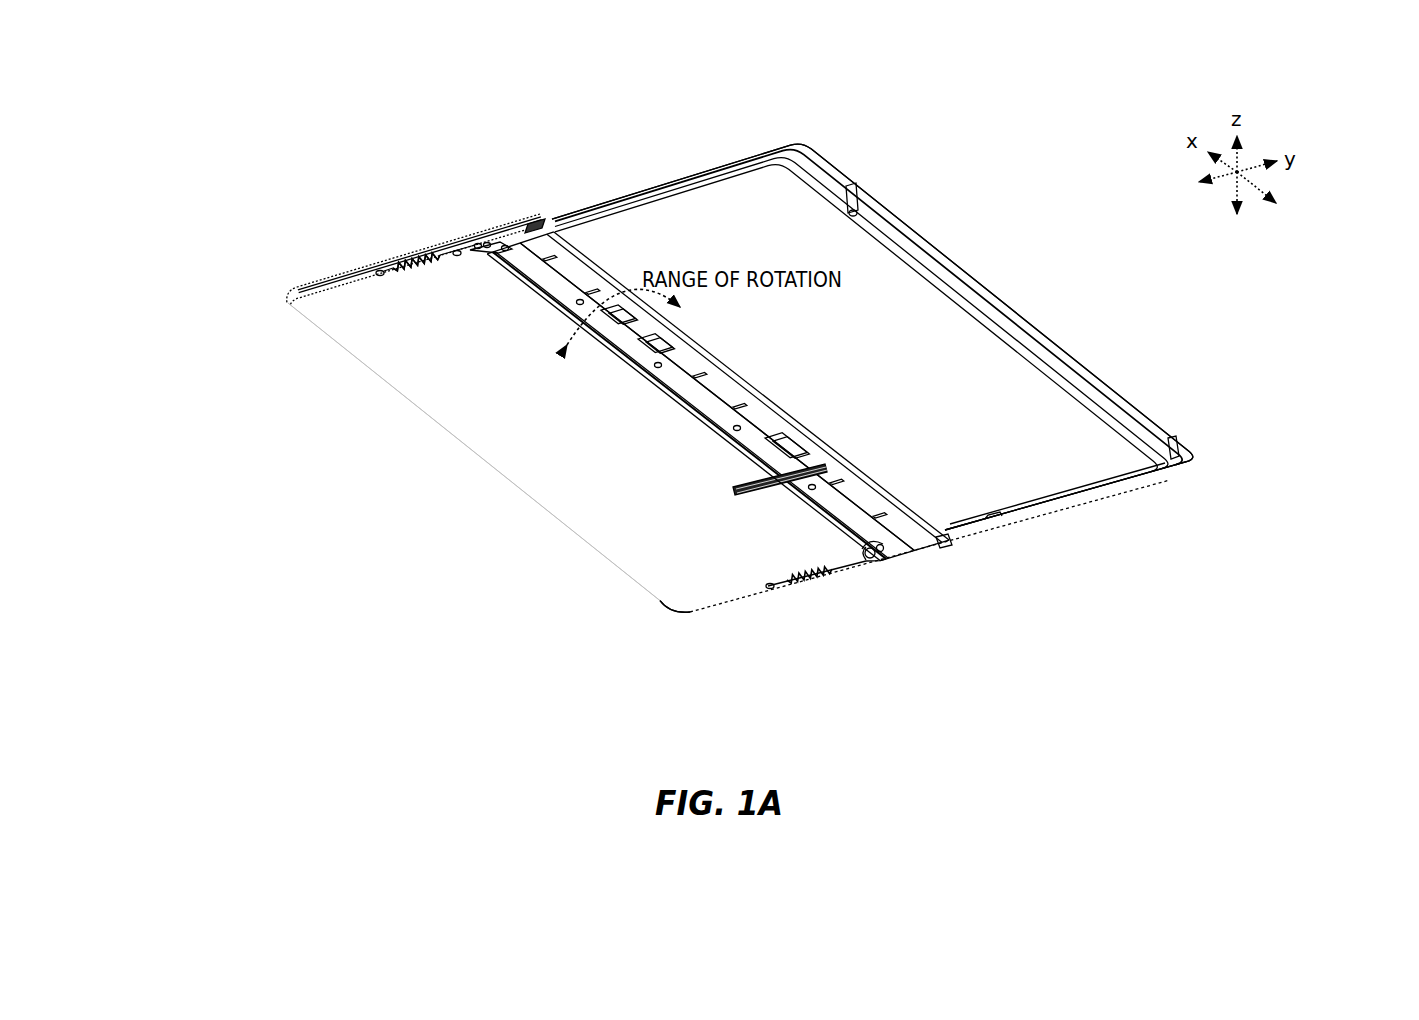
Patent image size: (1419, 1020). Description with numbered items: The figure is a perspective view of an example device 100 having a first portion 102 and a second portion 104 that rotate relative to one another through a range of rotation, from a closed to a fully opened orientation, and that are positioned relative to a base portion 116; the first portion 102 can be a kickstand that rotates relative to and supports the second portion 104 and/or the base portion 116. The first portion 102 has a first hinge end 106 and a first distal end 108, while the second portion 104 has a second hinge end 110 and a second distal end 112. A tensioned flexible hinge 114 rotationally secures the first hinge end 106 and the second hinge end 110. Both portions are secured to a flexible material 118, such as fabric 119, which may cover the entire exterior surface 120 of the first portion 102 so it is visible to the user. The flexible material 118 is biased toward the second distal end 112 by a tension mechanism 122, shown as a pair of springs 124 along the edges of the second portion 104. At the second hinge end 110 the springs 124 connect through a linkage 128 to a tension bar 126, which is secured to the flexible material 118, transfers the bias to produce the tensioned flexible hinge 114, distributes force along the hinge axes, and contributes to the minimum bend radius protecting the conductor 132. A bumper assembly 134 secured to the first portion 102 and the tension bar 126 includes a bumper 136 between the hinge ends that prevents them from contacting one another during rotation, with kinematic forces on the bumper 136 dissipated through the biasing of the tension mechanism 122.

The device 100 is at (261, 91).
The first portion 102 is at (660, 190).
The second portion 104 is at (548, 524).
The first hinge end 106 is at (931, 546).
The first distal end 108 is at (1160, 484).
The second hinge end 110 is at (863, 571).
The second distal end 112 is at (690, 615).
The tensioned flexible hinge 114 is at (532, 240).
The base portion 116 is at (862, 190).
The flexible material 118 is at (1004, 503).
The fabric 119 is at (1107, 484).
The exterior surface 120 is at (916, 410).
The tension mechanism 122 is at (417, 257).
The springs 124 is at (397, 268).
The tension bar 126 is at (866, 544).
The linkage 128 is at (882, 566).
The conductor 132 is at (740, 491).
The bumper assembly 134 is at (590, 257).
The bumper 136 is at (531, 224).